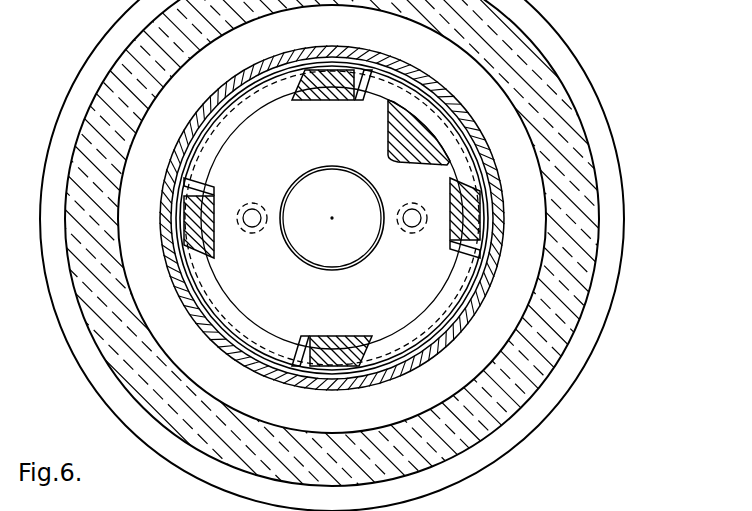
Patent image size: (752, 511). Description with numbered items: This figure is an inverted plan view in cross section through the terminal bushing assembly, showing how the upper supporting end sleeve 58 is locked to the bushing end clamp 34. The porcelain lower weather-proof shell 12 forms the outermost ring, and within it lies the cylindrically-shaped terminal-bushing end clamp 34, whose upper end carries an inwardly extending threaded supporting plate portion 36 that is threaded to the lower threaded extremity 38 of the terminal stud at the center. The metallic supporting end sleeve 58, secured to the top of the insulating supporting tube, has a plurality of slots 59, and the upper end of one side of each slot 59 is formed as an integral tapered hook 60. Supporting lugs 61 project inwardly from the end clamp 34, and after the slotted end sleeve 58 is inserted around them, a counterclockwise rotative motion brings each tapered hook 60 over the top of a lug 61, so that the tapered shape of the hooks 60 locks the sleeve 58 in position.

The lower weather-proof shell 12 is at (598, 210).
The terminal-bushing end clamp 34 is at (519, 140).
The threaded supporting plate portion 36 is at (368, 290).
The lower threaded extremity of the terminal stud 38 is at (369, 251).
The supporting end sleeve 58 is at (443, 115).
The slots 59 is at (242, 107).
The tapered hook 60 is at (365, 101).
The supporting lug 61 is at (335, 106).